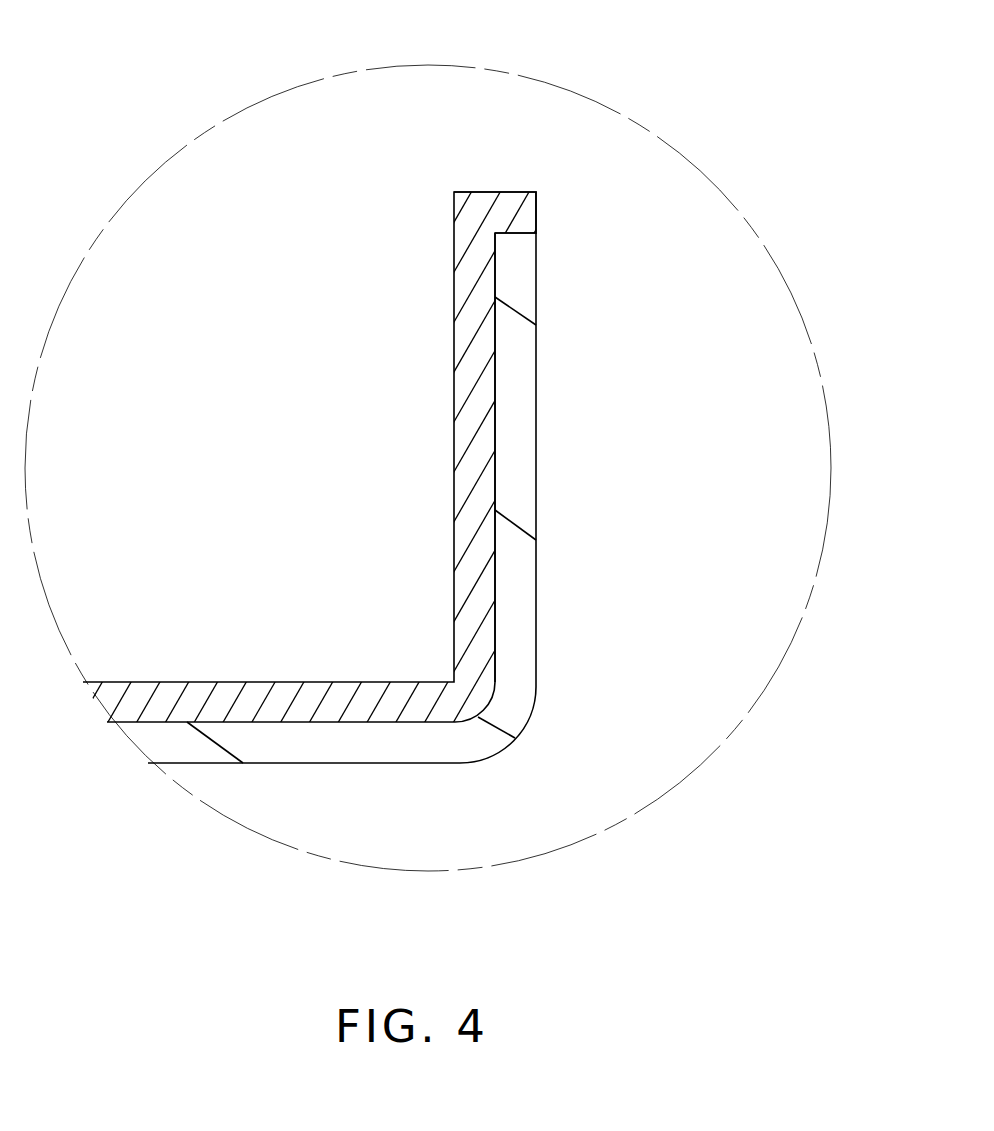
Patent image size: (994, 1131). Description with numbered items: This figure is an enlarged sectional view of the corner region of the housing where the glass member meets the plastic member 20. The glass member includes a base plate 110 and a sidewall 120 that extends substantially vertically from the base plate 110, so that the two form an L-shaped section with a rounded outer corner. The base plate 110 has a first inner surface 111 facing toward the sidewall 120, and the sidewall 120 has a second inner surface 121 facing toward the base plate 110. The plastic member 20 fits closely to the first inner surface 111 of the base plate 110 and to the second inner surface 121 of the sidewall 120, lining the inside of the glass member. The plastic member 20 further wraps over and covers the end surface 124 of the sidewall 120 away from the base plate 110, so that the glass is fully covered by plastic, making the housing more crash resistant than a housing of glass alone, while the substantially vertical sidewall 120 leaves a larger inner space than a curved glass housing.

The plastic member 20 is at (310, 698).
The base plate 110 is at (195, 750).
The first inner surface 111 is at (350, 723).
The sidewall 120 is at (518, 263).
The second inner surface 121 is at (497, 432).
The end surface 124 is at (512, 232).